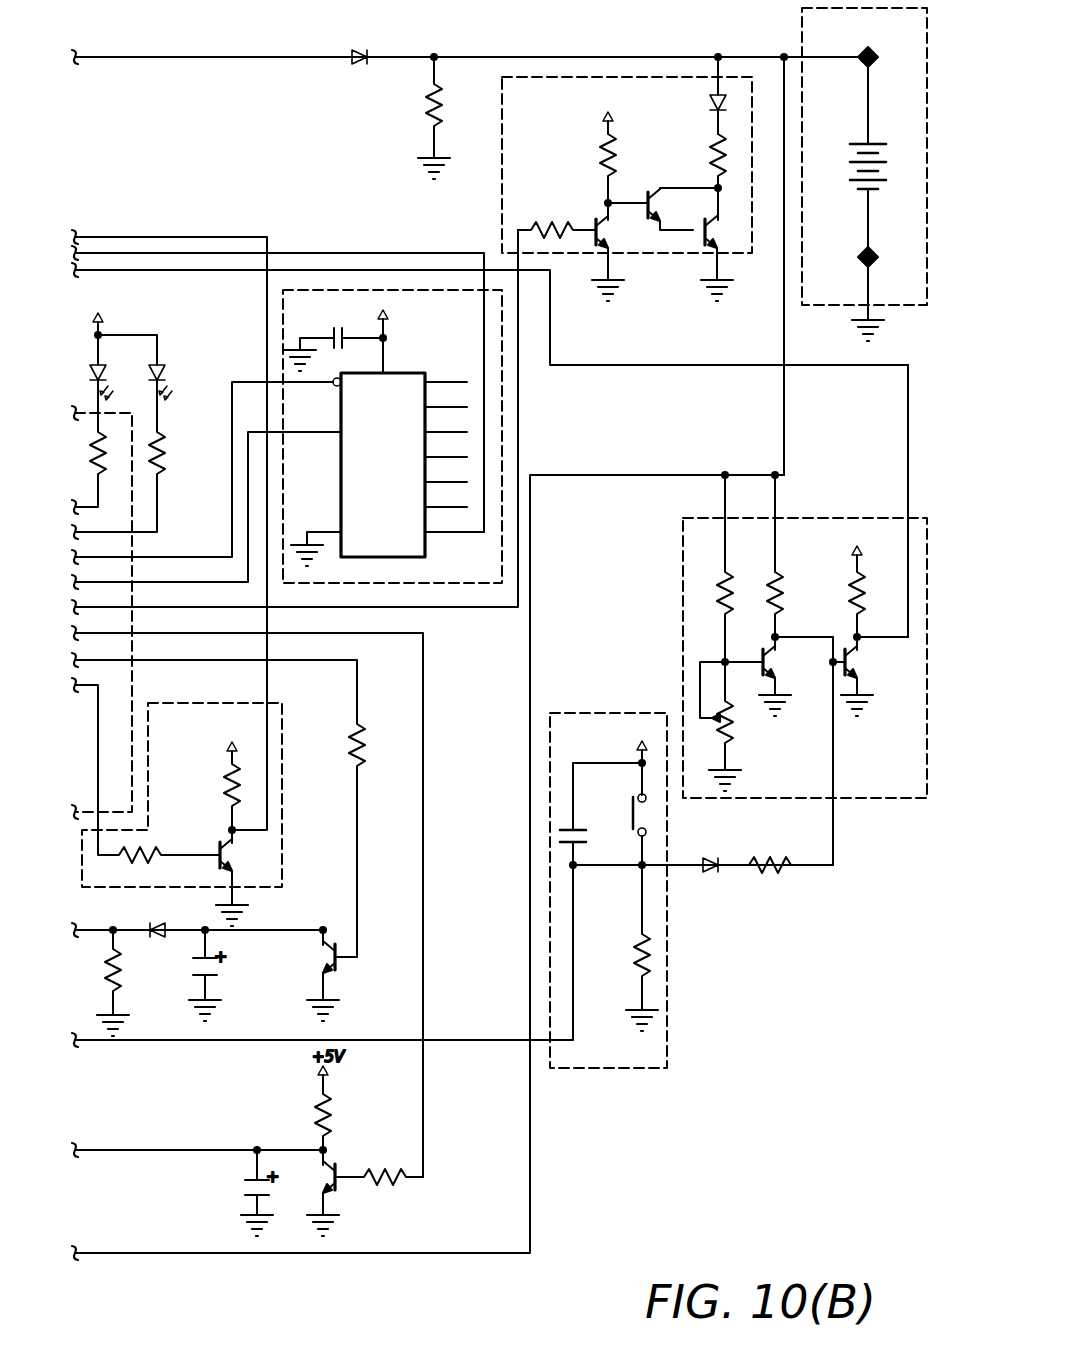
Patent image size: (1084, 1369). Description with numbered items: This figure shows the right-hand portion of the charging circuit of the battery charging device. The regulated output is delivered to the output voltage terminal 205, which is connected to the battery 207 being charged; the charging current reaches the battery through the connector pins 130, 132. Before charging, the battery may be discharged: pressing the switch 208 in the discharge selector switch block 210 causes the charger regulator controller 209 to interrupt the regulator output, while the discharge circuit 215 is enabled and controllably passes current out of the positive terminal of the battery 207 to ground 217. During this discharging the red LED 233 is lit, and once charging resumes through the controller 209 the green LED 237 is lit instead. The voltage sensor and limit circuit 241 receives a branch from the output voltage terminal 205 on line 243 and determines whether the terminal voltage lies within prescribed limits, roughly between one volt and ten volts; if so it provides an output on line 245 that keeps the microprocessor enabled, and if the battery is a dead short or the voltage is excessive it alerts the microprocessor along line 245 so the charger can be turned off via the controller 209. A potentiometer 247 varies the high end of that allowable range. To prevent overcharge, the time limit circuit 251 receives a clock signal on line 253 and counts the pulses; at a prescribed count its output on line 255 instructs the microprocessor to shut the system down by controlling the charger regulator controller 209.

The output voltage terminal 205 is at (860, 55).
The pin 132 is at (878, 64).
The battery 207 is at (876, 140).
The pin 130 is at (876, 250).
The discharge circuit 215 is at (502, 175).
The ground 217 is at (705, 262).
The green LED 237 is at (117, 367).
The red LED 233 is at (176, 367).
The line 253 is at (232, 518).
The time limit circuit 251 is at (382, 584).
The line 255 is at (474, 545).
The line 245 is at (908, 443).
The line 243 is at (729, 553).
The potentiometer 247 is at (737, 745).
The voltage sensor and limit circuit 241 is at (860, 797).
The charger regulator controller 209 is at (187, 703).
The switch 208 is at (630, 796).
The discharge selector switch block 210 is at (667, 1012).